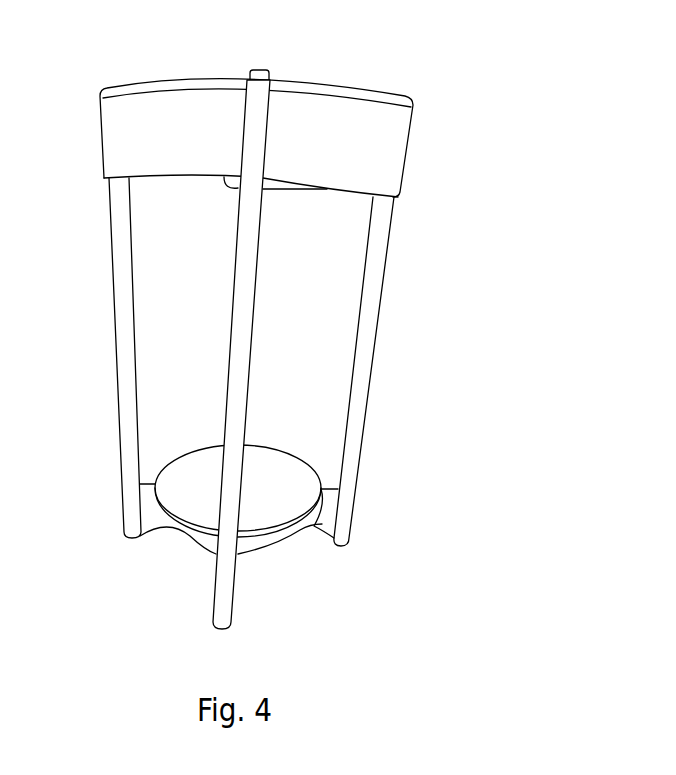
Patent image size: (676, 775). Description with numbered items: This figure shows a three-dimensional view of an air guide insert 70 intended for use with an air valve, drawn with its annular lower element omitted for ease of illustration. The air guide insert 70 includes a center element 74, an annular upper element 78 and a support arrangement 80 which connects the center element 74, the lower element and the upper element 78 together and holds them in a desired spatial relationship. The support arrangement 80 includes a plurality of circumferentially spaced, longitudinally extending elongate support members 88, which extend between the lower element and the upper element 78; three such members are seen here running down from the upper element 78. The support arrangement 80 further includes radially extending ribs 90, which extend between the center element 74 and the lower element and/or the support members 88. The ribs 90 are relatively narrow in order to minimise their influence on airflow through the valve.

The air guide insert 70 is at (442, 219).
The center element 74 is at (283, 470).
The annular upper element 78 is at (352, 128).
The support arrangement 80 is at (390, 352).
The elongate support members 88 is at (238, 268).
The radially extending ribs 90 is at (152, 505).